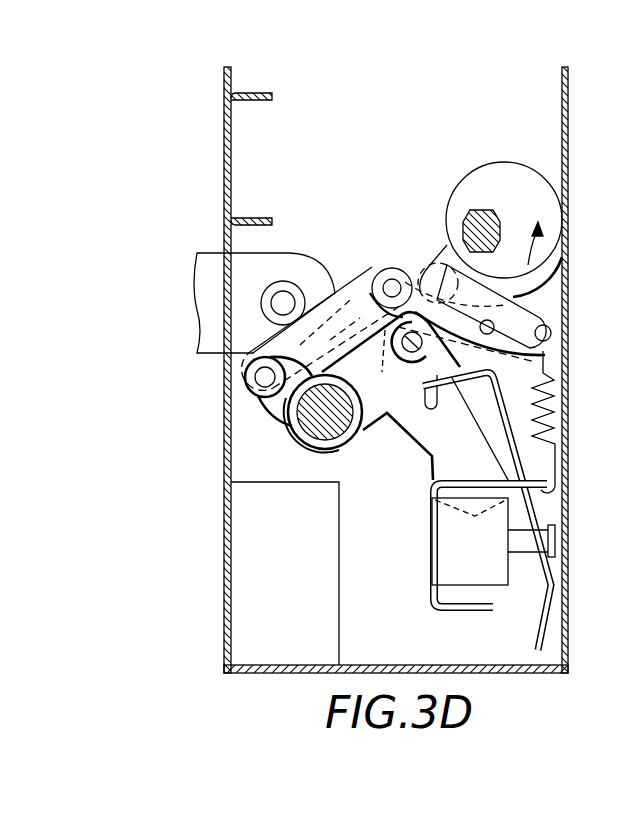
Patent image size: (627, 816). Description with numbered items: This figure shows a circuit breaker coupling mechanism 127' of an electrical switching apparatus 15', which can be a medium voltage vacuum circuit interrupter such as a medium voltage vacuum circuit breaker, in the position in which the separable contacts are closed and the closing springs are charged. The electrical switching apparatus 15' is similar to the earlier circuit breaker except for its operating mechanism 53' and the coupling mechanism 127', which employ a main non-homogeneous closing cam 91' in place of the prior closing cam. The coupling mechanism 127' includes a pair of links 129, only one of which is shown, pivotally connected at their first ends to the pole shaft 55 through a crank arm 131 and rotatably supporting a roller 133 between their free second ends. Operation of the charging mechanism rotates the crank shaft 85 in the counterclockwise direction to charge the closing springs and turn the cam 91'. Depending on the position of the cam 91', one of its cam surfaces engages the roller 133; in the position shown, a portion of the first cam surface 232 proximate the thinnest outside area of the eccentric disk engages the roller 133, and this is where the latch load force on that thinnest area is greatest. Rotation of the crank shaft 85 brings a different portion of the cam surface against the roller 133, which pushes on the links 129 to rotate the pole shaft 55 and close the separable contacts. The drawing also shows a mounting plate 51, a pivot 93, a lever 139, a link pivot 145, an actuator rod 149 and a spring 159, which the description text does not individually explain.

The electrical switching apparatus 15' is at (127, 374).
The plate 51 is at (214, 252).
The operating mechanism 53' is at (226, 537).
The pole shaft 55 is at (320, 432).
The crank shaft 85 is at (480, 218).
The main non-homogeneous closing cam 91' is at (488, 239).
The cam pivot 93 is at (440, 265).
The circuit breaker coupling mechanism 127' is at (372, 138).
The links 129 is at (308, 330).
The crank arm 131 is at (270, 400).
The roller 133 is at (370, 270).
The lever arm 139 is at (552, 306).
The link pivot 145 is at (415, 262).
The actuator rod 149 is at (453, 390).
The spring 159 is at (556, 412).
The first cam surface 232 is at (410, 352).